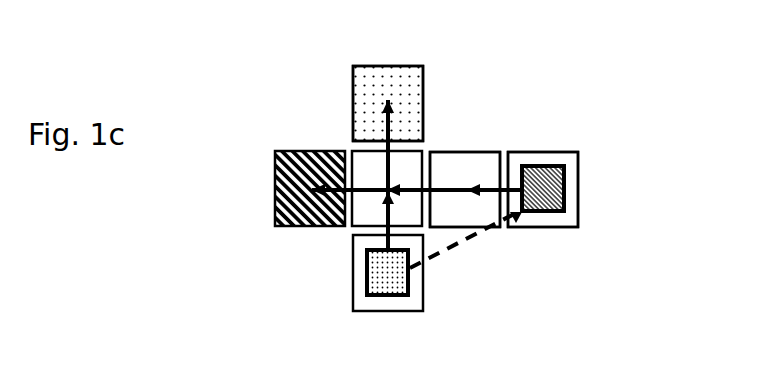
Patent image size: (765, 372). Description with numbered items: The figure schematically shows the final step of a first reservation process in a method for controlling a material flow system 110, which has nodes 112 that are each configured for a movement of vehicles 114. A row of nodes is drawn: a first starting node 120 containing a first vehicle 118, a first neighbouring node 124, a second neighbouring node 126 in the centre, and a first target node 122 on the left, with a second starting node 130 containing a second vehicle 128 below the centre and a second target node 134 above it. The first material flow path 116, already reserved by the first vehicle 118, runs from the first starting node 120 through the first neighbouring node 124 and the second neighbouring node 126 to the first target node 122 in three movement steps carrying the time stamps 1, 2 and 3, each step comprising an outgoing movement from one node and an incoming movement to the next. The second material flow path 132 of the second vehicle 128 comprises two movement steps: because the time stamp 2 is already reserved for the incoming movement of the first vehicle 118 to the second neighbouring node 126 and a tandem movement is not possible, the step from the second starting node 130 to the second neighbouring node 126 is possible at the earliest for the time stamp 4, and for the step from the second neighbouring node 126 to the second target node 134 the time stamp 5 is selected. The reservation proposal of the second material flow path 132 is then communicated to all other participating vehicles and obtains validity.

The material flow system 110 is at (567, 255).
The nodes 112 is at (523, 157).
The vehicles 114 is at (370, 283).
The first material flow path 116 is at (462, 193).
The first vehicle 118 is at (553, 188).
The first starting node 120 is at (573, 162).
The first target node 122 is at (288, 205).
The first neighbouring node 124 is at (477, 158).
The second neighbouring node 126 is at (368, 160).
The second vehicle 128 is at (372, 288).
The second starting node 130 is at (408, 311).
The second material flow path 132 is at (388, 243).
The second target node 134 is at (397, 75).
The time stamp 1 is at (481, 180).
The time stamp 2 is at (401, 179).
The time stamp 3 is at (325, 179).
The time stamp 4 is at (383, 207).
The time stamp 5 is at (383, 117).